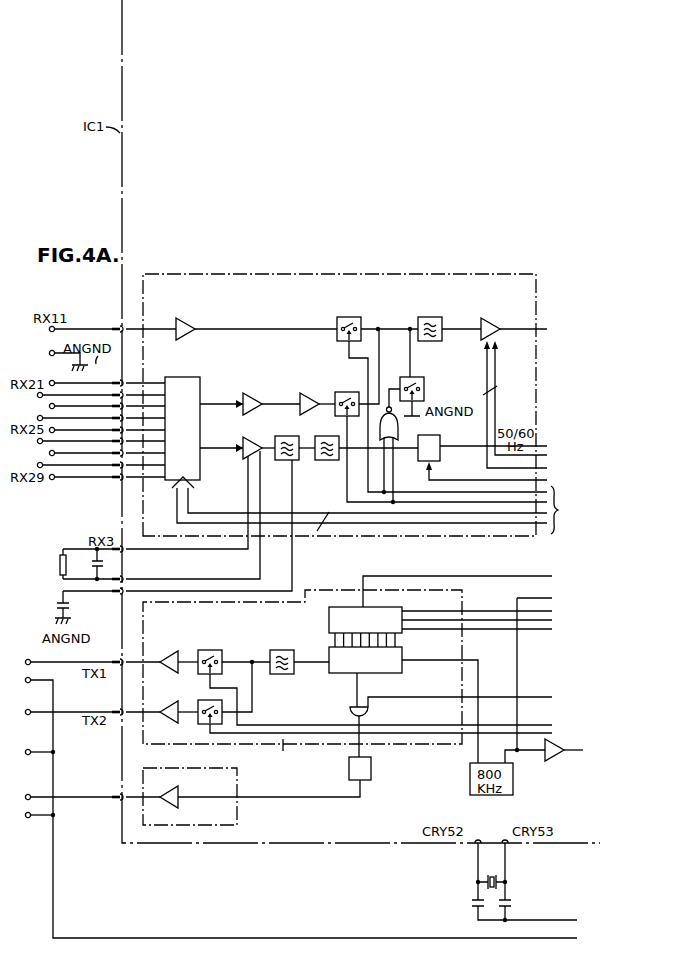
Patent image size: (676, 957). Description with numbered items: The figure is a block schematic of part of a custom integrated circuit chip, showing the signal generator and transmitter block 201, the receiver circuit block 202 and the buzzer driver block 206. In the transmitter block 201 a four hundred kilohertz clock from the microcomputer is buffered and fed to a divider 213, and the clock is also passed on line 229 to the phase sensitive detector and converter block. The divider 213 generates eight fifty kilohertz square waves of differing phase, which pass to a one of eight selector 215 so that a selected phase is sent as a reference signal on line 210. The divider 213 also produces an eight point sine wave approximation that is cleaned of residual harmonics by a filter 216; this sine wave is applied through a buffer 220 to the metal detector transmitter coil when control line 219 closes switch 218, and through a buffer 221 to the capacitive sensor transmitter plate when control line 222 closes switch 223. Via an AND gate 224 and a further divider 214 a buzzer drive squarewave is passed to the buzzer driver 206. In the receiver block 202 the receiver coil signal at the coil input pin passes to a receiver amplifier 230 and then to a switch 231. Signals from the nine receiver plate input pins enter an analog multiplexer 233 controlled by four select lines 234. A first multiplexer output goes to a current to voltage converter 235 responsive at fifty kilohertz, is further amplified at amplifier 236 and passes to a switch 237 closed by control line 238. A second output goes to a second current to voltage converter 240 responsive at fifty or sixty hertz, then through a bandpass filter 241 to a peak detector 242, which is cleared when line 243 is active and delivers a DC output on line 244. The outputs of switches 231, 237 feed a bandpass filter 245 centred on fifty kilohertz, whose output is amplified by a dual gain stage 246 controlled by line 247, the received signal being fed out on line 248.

The signal generator and transmitter block 201 is at (348, 589).
The receiver circuit block 202 is at (516, 538).
The buzzer driver block 206 is at (238, 803).
The reference signal line 210 is at (402, 577).
The divider 213 is at (398, 673).
The divider 214 is at (371, 768).
The one of eight selector 215 is at (400, 608).
The filter 216 is at (286, 650).
The switch 218 is at (220, 643).
The control line 219 is at (303, 725).
The buffer 220 is at (172, 643).
The buffer 221 is at (167, 720).
The control line 222 is at (283, 741).
The switch 223 is at (204, 725).
The AND gate 224 is at (370, 713).
The clock line 229 is at (517, 652).
The receiver amplifier 230 is at (181, 319).
The switch 231 is at (355, 318).
The analog multiplexer 233 is at (196, 433).
The select lines 234 is at (381, 505).
The current to voltage converter 235 is at (252, 385).
The amplifier 236 is at (305, 385).
The switch 237 is at (347, 392).
The control line 238 is at (347, 495).
The second current to voltage converter 240 is at (245, 440).
The bandpass filter 241 is at (322, 436).
The peak detector 242 is at (426, 440).
The clear line 243 is at (440, 482).
The DC output line 244 is at (453, 447).
The bandpass filter 245 is at (425, 318).
The dual gain stage 246 is at (483, 337).
The gain control line 247 is at (490, 347).
The received signal output line 248 is at (512, 328).